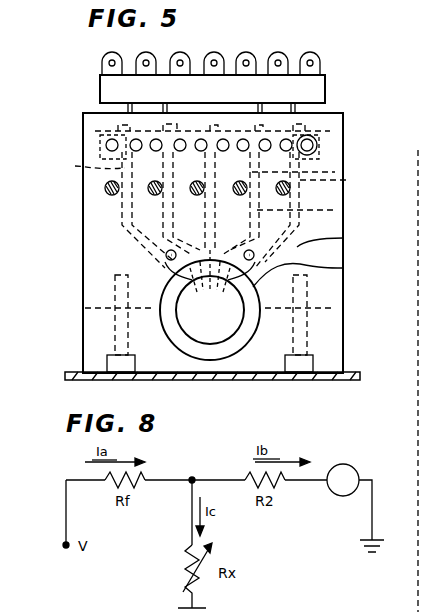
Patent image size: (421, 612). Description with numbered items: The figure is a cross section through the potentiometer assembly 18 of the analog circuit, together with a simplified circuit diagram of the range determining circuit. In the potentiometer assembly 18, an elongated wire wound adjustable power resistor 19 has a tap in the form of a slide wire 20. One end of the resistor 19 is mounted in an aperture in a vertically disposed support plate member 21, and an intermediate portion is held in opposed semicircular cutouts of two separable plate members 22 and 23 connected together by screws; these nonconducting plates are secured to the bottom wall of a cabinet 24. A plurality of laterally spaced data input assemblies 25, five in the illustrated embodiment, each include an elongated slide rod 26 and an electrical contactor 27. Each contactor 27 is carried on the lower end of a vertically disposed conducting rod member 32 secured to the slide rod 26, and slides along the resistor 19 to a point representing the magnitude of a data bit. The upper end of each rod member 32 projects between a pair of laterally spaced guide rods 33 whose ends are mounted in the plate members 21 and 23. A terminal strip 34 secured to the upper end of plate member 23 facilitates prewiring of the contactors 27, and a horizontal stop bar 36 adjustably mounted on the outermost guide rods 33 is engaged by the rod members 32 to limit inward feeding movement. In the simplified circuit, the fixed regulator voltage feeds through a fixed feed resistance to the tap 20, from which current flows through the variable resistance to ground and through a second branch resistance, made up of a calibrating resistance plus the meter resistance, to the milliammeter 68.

In FIG. 5, the potentiometer assembly 18 is at (340, 114).
In FIG. 5, the wire wound adjustable power resistor 19 is at (343, 268).
In FIG. 5, the support plate member 21 is at (343, 240).
In FIG. 5, the separable plate member 22 is at (322, 330).
In FIG. 5, the separable plate member 23 is at (322, 290).
In FIG. 5, the cabinet 24 is at (325, 372).
In FIG. 5, the data input assembly 25 is at (290, 186).
In FIG. 5, the slide rod 26 is at (148, 190).
In FIG. 5, the electrical contactor 27 is at (210, 305).
In FIG. 5, the rod member 32 is at (312, 208).
In FIG. 5, the guide rod 33 is at (125, 160).
In FIG. 5, the terminal strip 34 is at (162, 90).
In FIG. 5, the horizontal stop bar 36 is at (270, 132).
In FIG. 8, the slide wire 20 is at (188, 485).
In FIG. 8, the milliammeter 68 is at (337, 495).